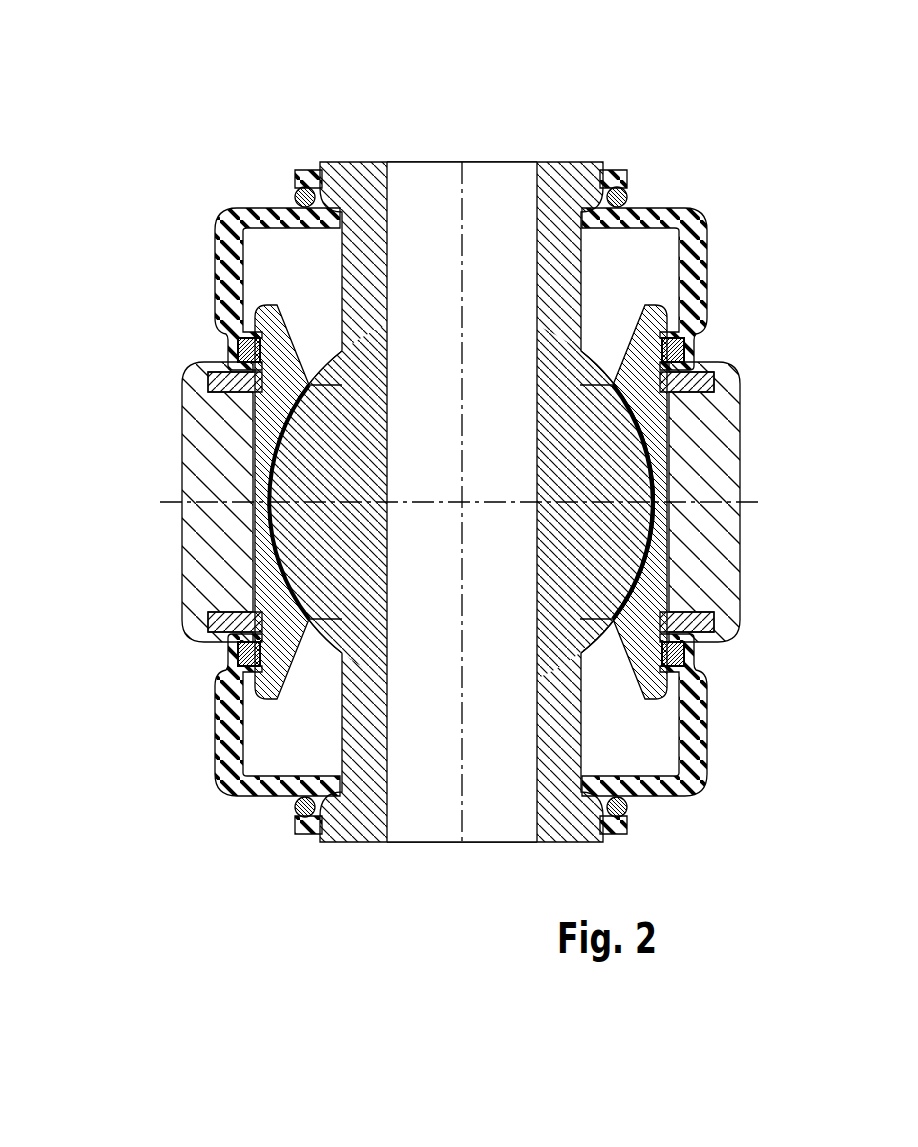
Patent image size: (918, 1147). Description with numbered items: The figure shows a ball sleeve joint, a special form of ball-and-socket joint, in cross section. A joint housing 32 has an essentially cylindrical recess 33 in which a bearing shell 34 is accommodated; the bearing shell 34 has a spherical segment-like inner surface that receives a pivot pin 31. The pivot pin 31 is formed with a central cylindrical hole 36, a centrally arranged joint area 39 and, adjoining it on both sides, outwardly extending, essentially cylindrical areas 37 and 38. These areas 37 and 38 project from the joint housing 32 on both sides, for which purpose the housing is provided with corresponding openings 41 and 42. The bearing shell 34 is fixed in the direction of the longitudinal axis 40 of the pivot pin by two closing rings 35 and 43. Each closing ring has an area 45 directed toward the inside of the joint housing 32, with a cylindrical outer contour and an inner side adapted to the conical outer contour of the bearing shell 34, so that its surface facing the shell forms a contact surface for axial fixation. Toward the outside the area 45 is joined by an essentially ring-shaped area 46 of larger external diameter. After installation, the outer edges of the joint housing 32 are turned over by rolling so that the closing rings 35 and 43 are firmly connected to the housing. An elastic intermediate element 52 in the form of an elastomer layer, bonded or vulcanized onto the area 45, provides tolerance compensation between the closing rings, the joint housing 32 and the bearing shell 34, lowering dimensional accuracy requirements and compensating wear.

The pivot pin 31 is at (565, 172).
The joint housing 32 is at (713, 468).
The cylindrical recess 33 is at (270, 515).
The bearing shell 34 is at (260, 547).
The closing ring 35 is at (177, 380).
The central cylindrical hole 36 is at (436, 803).
The cylindrical area 37 is at (588, 262).
The cylindrical area 38 is at (592, 728).
The joint area 39 is at (313, 473).
The longitudinal axis 40 is at (462, 190).
The opening 41 is at (316, 327).
The opening 42 is at (313, 672).
The closing ring 43 is at (212, 635).
The inner area of closing ring 45 is at (667, 597).
The outer ring-shaped area 46 is at (707, 630).
The elastic intermediate element 52 is at (657, 598).